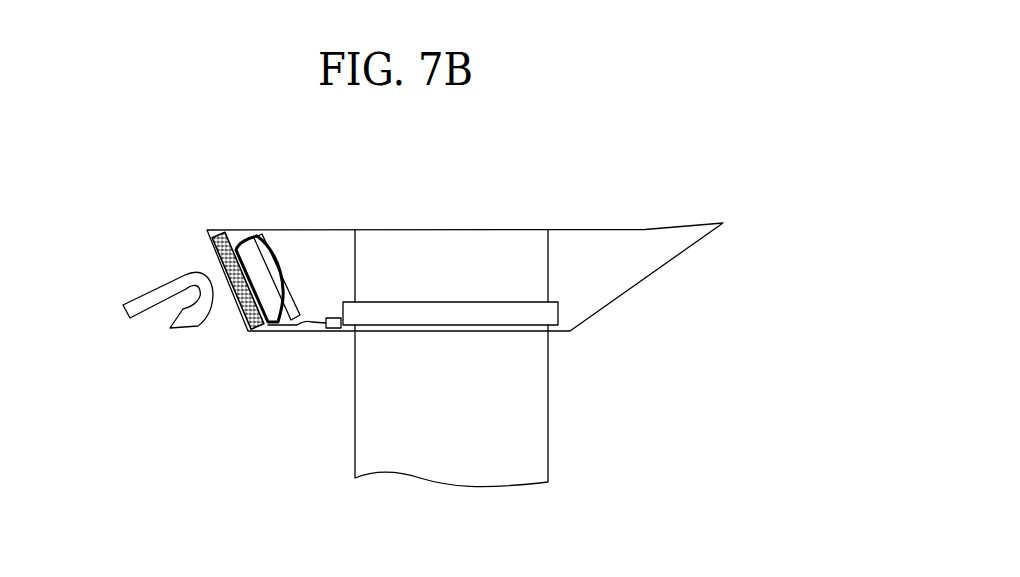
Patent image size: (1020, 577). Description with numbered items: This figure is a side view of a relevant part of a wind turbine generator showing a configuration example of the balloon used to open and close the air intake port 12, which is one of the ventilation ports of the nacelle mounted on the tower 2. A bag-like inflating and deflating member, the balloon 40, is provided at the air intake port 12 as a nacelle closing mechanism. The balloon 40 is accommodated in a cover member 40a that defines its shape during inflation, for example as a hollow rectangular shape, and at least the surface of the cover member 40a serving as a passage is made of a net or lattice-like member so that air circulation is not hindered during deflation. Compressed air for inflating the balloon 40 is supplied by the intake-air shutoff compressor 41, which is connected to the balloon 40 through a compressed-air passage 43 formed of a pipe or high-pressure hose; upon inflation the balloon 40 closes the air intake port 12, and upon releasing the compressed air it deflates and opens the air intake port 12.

The tower 2 is at (538, 413).
The air intake port 12 is at (238, 313).
The balloon 40 is at (256, 260).
The cover member 40a is at (290, 305).
The intake-air shutoff compressor 41 is at (331, 332).
The compressed-air passage 43 is at (302, 328).